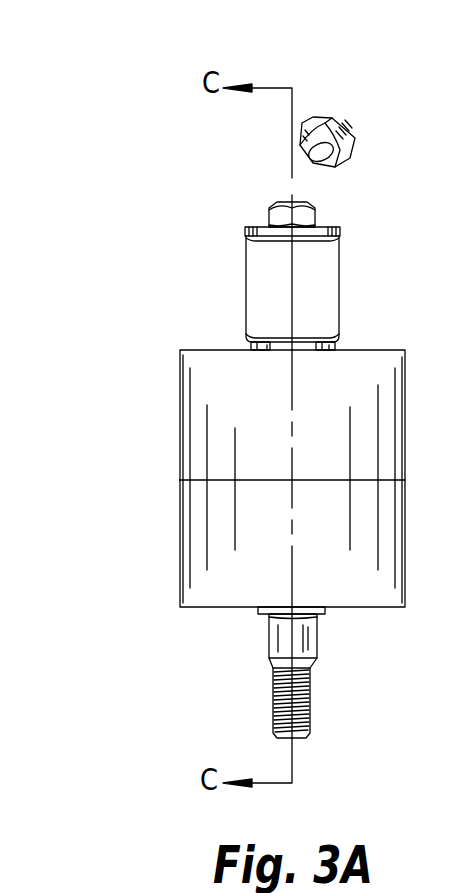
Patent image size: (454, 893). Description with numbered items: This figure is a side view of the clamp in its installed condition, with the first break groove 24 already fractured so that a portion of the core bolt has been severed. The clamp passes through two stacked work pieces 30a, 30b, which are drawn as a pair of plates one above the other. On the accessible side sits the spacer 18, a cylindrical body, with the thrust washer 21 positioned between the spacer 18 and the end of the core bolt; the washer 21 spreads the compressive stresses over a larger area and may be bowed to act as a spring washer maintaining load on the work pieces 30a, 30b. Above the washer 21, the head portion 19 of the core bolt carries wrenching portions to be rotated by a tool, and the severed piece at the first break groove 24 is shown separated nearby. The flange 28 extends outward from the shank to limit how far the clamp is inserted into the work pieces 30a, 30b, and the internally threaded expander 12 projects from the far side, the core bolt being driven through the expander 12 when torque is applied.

The expander 12 is at (303, 640).
The spacer 18 is at (320, 285).
The head portion 19 is at (375, 178).
The thrust washer 21 is at (258, 227).
The first break groove 24 is at (342, 123).
The flange 28 is at (333, 345).
The work piece 30a is at (185, 433).
The work piece 30b is at (193, 543).